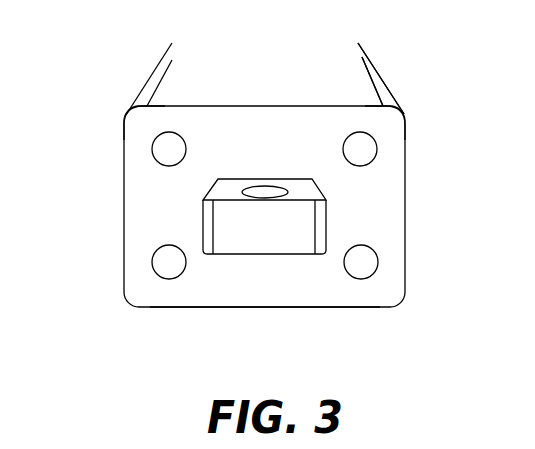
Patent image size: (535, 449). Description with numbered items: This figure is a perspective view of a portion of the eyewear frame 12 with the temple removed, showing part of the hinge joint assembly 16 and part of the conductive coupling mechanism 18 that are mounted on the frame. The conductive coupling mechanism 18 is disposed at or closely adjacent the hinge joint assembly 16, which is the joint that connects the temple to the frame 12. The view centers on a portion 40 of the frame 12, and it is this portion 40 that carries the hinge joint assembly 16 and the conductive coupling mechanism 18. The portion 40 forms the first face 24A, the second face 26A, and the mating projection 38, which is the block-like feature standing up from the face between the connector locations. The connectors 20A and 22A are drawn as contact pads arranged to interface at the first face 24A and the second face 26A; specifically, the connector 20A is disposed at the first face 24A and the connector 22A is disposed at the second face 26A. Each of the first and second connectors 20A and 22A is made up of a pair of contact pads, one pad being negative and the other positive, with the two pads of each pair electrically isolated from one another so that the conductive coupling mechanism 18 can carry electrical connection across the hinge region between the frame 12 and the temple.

The frame 12 is at (285, 35).
The hinge joint assembly 16 is at (102, 100).
The conductive coupling mechanism 18 is at (230, 335).
The portion of the frame 40 is at (350, 78).
The second face 26A is at (143, 132).
The first face 24A is at (385, 130).
The connector 22A is at (169, 149).
The connector 20A is at (360, 149).
The mating projection 38 is at (277, 241).